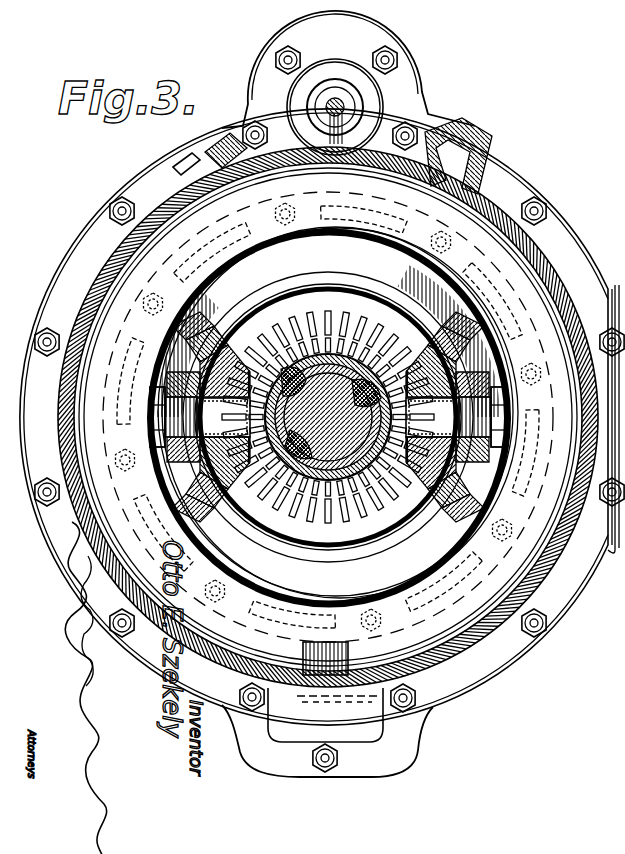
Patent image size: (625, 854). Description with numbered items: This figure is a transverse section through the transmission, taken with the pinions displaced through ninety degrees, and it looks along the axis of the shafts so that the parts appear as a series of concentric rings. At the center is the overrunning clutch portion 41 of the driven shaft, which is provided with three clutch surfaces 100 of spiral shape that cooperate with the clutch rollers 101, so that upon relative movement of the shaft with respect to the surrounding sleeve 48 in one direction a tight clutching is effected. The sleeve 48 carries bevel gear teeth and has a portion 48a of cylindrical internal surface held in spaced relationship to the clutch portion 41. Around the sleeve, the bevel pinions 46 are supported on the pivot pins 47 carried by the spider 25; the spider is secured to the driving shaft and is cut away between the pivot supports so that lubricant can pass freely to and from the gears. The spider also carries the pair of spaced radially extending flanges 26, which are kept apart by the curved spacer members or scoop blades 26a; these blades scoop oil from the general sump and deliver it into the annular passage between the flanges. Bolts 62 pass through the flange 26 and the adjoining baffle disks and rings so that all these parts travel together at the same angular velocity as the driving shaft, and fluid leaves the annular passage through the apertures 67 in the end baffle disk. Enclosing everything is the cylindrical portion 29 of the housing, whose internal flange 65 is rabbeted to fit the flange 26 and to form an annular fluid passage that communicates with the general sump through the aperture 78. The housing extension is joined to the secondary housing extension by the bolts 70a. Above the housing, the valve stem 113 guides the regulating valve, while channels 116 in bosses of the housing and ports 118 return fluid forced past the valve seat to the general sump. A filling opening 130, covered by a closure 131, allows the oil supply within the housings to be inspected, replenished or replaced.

The spider 25 is at (366, 558).
The radially extending flanges 26 is at (377, 250).
The curved spacer members or scoop blades 26a is at (480, 298).
The cylindrical portion of the housing 29 is at (460, 628).
The overrunning clutch portion 41 is at (328, 417).
The bevel pinions 46 is at (447, 350).
The pivot pins 47 is at (328, 417).
The sleeve 48 is at (286, 292).
The portion of cylindrical internal surface 48a is at (262, 288).
The bolts 62 is at (270, 216).
The internal flange 65 is at (490, 644).
The apertures 67 is at (353, 296).
The bolts 70a is at (548, 212).
The aperture 78 is at (303, 657).
The clutch surfaces 100 is at (281, 304).
The clutch rollers 101 is at (394, 306).
The valve stem 113 is at (345, 105).
The channels 116 is at (457, 154).
The ports 118 is at (437, 176).
The filling opening 130 is at (215, 165).
The closure 131 is at (162, 181).